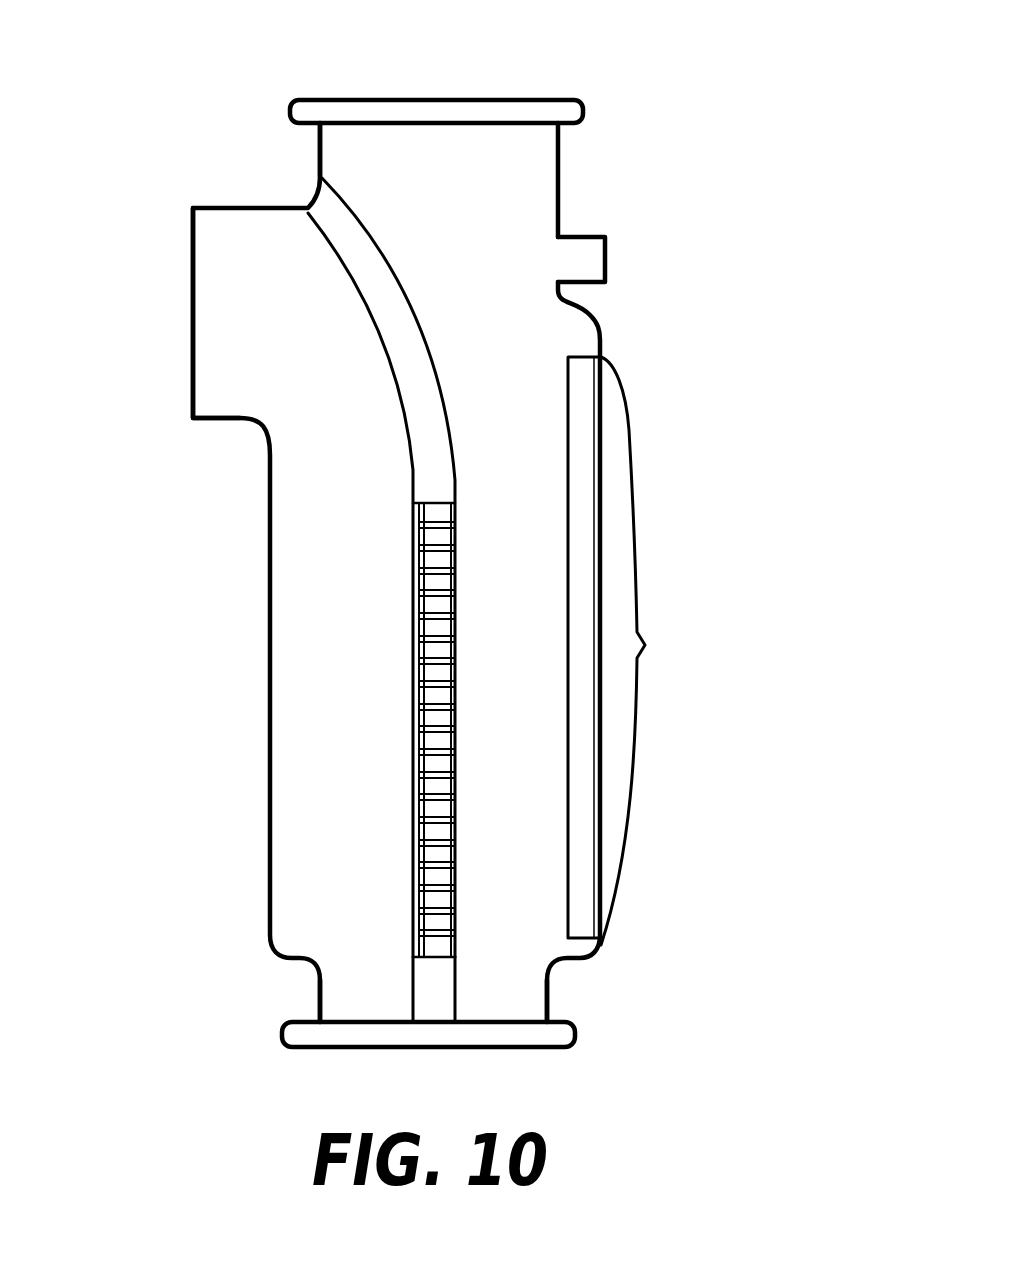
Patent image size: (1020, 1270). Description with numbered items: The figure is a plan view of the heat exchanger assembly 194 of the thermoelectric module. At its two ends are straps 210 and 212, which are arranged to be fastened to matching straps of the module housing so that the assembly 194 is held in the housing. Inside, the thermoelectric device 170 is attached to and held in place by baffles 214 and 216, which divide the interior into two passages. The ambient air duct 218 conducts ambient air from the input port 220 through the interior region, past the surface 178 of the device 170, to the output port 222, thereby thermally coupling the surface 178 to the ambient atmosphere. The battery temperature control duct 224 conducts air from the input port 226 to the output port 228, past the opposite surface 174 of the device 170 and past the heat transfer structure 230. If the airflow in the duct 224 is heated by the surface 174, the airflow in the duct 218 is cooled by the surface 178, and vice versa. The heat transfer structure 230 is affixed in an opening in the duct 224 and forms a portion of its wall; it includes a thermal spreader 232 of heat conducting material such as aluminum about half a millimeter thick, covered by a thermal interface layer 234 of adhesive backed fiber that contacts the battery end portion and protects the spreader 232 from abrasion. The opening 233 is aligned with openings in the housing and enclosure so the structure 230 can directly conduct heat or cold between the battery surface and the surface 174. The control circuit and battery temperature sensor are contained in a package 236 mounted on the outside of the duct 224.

The heat exchanger assembly 194 is at (205, 743).
The strap 212 is at (583, 100).
The output port 228 is at (420, 147).
The package 236 is at (581, 245).
The baffle 216 is at (368, 266).
The output port 222 is at (215, 343).
The ambient air duct 218 is at (367, 515).
The battery temperature control duct 224 is at (548, 515).
The thermoelectric device 170 is at (452, 628).
The surface 174 is at (455, 726).
The surface 178 is at (416, 745).
The baffle 214 is at (457, 968).
The thermal spreader 232 is at (591, 392).
The thermal interface layer 234 is at (600, 460).
The opening 233 is at (657, 651).
The heat transfer structure 230 is at (698, 640).
The strap 210 is at (577, 1030).
The input port 220 is at (345, 1013).
The input port 226 is at (497, 1010).